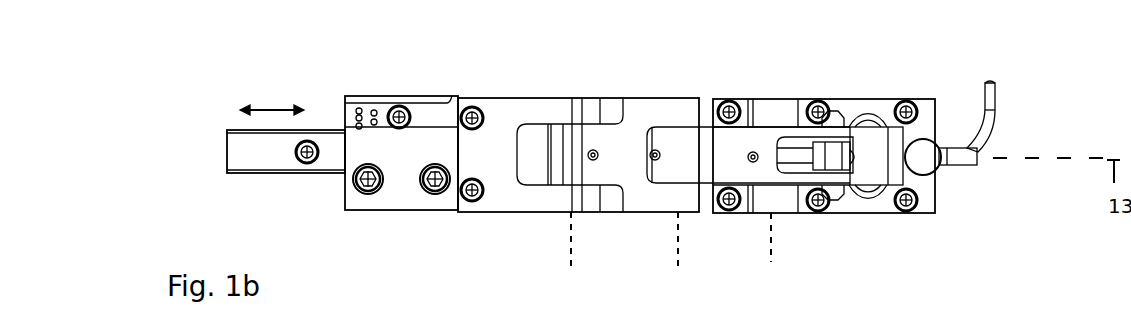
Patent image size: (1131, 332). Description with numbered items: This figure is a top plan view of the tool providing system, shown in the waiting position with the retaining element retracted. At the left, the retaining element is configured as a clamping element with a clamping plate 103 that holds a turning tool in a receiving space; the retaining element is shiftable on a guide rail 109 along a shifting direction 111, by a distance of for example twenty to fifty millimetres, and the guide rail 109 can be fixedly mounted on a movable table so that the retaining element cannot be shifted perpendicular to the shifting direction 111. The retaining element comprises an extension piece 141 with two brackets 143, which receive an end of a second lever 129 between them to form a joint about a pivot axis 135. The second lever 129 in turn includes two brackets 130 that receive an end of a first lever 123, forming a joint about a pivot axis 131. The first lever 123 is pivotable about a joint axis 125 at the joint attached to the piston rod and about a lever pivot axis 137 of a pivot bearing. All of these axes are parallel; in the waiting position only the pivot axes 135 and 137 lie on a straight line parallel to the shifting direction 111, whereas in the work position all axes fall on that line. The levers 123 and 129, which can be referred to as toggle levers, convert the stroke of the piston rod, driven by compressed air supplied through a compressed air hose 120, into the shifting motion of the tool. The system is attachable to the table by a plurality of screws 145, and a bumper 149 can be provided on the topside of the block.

The clamping plate 103 is at (407, 210).
The guide rail 109 is at (260, 167).
The shifting direction 111 is at (277, 110).
The compressed air hose 120 is at (997, 124).
The first lever 123 is at (745, 138).
The joint axis 125 is at (831, 214).
The second lever 129 is at (613, 145).
The brackets 130 is at (681, 108).
The pivot axis 131 is at (679, 254).
The pivot axis 135 is at (572, 254).
The lever pivot axis 137 is at (772, 262).
The extension piece 141 is at (503, 212).
The brackets 143 is at (537, 104).
The screws 145 is at (910, 100).
The bumper 149 is at (937, 172).